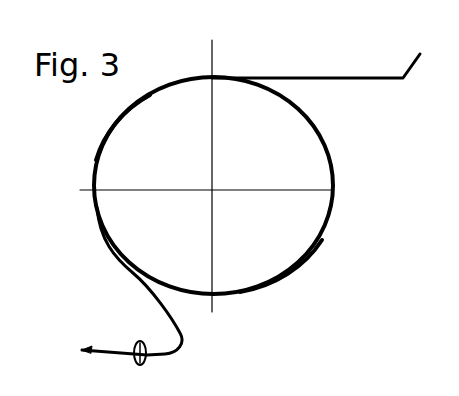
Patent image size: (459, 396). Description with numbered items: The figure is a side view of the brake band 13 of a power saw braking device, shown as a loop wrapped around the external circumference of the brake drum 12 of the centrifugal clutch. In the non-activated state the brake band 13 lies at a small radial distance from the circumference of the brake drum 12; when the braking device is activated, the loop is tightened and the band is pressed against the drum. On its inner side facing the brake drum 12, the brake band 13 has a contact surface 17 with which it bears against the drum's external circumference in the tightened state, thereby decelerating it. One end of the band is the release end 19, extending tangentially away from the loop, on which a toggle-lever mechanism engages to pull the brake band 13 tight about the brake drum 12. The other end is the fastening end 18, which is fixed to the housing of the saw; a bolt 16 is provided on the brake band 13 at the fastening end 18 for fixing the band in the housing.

The brake drum 12 is at (333, 160).
The brake band 13 is at (312, 257).
The contact surface 17 is at (96, 149).
The release end 19 is at (324, 57).
The fastening end 18 is at (89, 345).
The bolt 16 is at (146, 358).